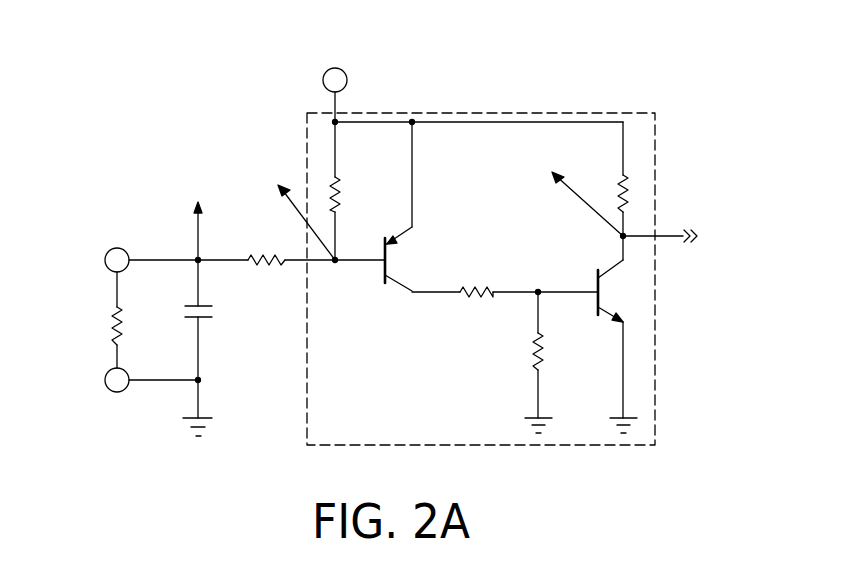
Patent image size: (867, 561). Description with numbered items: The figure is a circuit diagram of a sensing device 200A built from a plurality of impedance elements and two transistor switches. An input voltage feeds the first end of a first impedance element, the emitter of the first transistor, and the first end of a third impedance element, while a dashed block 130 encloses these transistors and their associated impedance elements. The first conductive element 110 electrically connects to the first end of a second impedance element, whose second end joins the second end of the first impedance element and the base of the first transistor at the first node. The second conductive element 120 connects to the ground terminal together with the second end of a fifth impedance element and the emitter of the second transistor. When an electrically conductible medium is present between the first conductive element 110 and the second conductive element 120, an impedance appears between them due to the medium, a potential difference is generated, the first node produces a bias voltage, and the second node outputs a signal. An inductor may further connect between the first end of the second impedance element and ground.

The sensing device 200A is at (108, 37).
The first conductive element 110 is at (109, 252).
The second conductive element 120 is at (109, 372).
The amplifier circuit 130 is at (655, 172).